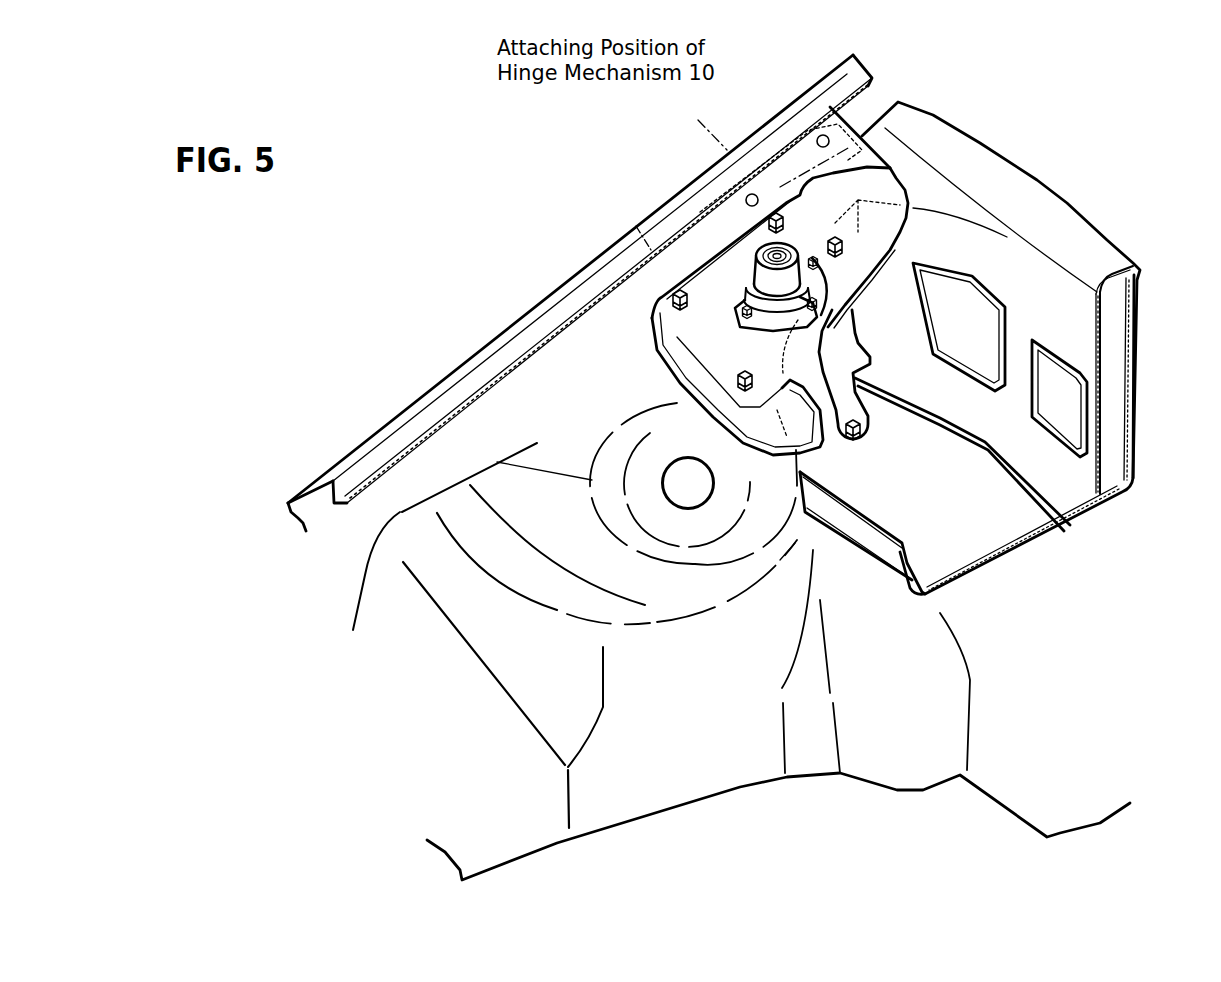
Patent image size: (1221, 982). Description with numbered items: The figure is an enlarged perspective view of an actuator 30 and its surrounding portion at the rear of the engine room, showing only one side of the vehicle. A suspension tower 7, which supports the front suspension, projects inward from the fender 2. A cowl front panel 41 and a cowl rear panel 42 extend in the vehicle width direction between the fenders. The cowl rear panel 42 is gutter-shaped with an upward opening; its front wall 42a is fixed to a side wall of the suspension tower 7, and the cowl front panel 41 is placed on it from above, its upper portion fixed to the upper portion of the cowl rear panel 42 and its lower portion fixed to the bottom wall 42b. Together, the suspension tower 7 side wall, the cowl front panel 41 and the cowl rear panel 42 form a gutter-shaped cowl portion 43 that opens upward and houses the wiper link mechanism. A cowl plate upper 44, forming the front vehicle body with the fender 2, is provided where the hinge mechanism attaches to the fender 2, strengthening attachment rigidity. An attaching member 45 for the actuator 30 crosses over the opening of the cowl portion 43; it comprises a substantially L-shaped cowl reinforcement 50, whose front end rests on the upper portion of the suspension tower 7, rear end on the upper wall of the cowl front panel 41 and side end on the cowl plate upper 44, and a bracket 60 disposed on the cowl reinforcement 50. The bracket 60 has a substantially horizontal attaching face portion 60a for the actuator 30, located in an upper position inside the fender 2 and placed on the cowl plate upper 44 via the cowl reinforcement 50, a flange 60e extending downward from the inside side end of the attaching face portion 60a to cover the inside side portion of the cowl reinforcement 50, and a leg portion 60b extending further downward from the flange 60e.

The fender 2 is at (377, 435).
The suspension tower 7 is at (538, 443).
The actuator 30 is at (762, 252).
The cowl front panel 41 is at (1012, 402).
The cowl rear panel 42 is at (1133, 393).
The front wall 42a is at (882, 547).
The bottom wall 42b is at (1005, 573).
The cowl portion 43 is at (1067, 558).
The cowl plate upper 44 is at (723, 217).
The attaching member 45 is at (652, 282).
The cowl reinforcement 50 is at (687, 373).
The bracket 60 is at (708, 332).
The attaching face portion 60a is at (750, 255).
The leg portion 60b is at (836, 393).
The flange 60e is at (812, 300).